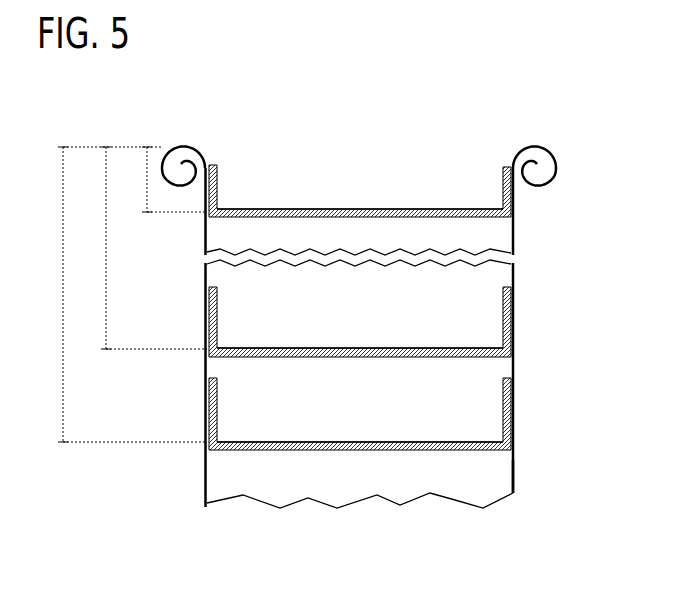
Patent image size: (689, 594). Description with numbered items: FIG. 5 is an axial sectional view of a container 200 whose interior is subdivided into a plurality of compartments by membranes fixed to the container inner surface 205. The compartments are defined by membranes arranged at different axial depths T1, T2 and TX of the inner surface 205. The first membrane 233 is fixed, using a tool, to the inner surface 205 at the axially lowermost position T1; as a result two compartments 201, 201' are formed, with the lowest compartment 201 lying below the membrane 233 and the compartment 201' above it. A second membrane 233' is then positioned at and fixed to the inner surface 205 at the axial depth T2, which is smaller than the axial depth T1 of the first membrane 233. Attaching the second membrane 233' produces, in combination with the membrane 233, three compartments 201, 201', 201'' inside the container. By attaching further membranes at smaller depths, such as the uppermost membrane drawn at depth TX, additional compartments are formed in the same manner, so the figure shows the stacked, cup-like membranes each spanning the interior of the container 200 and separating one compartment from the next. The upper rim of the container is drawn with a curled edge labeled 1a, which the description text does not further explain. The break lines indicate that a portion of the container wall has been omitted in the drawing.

The container 200 is at (400, 122).
The curled edge of sheet 1a is at (549, 174).
The compartment 201'' is at (406, 311).
The second membrane 233' is at (360, 318).
The compartment 201' is at (404, 404).
The membrane 233 is at (360, 411).
The compartment 201 is at (544, 477).
The inner surface 205 is at (209, 492).
The axial depth T1 is at (122, 294).
The axial depth T2 is at (142, 248).
The axial depth TX is at (163, 179).